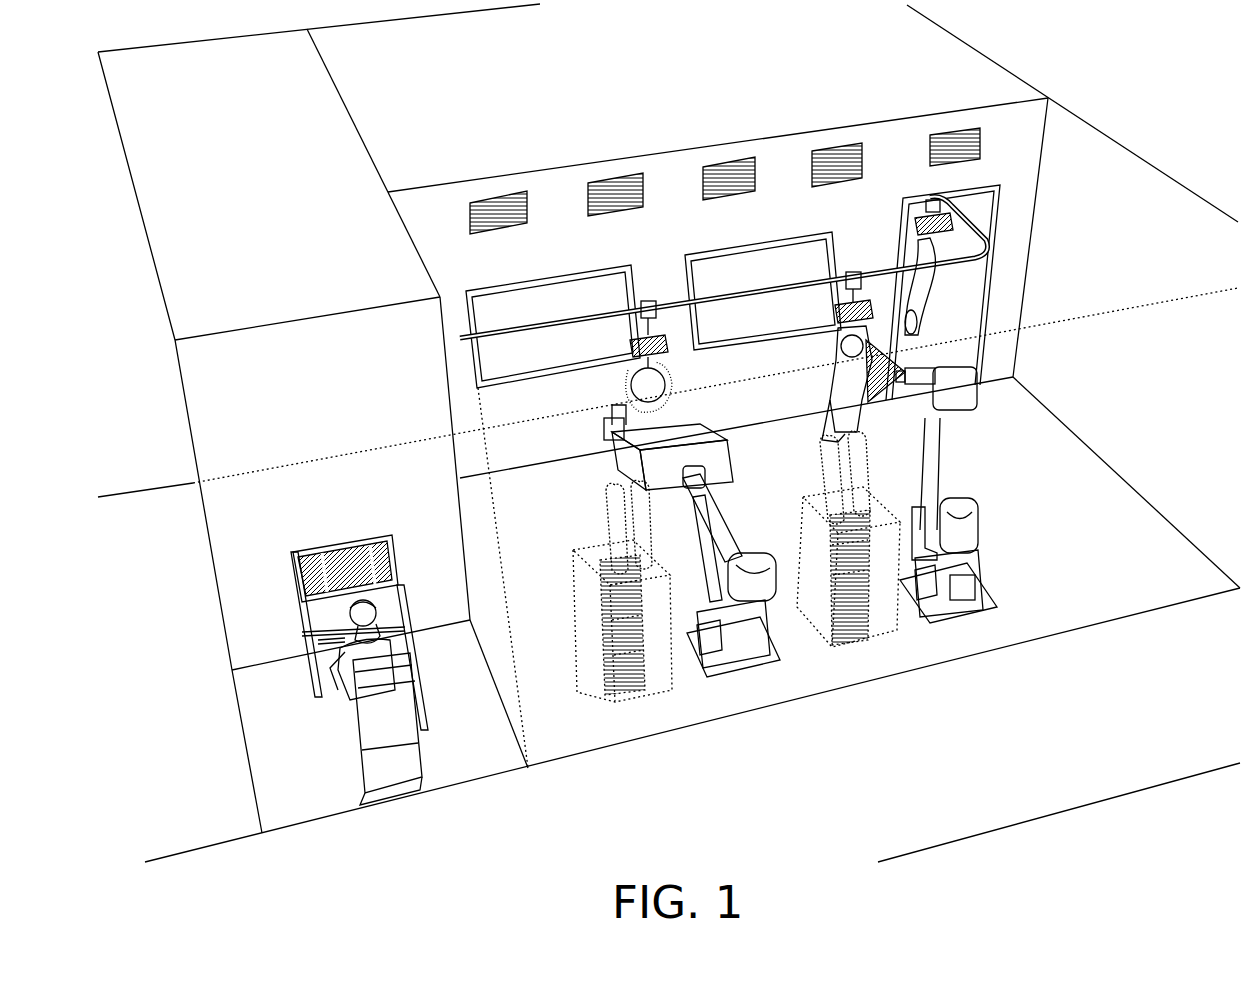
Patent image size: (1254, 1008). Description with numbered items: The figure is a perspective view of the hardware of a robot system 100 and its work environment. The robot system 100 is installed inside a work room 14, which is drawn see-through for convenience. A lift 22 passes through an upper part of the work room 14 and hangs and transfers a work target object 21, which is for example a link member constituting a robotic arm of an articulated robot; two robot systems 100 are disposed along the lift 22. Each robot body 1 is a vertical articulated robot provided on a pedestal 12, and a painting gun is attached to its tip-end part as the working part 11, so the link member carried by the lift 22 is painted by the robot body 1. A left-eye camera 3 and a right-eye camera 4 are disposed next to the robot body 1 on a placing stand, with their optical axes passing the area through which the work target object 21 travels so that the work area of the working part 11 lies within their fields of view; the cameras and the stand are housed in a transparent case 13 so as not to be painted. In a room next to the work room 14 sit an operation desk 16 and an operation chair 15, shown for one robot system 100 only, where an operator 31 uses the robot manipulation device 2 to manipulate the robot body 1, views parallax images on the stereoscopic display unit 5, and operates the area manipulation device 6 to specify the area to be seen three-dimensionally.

The robot body 1 is at (979, 477).
The robot manipulation device 2 is at (347, 617).
The left-eye camera 3 is at (827, 500).
The right-eye camera 4 is at (873, 517).
The stereoscopic display unit 5 is at (343, 543).
The area manipulation device 6 is at (327, 637).
The working part 11 is at (980, 358).
The pedestal 12 is at (982, 571).
The transparent case 13 is at (897, 620).
The work room 14 is at (1093, 125).
The operation chair 15 is at (373, 723).
The operation desk 16 is at (317, 620).
The work target object 21 is at (835, 387).
The lift 22 is at (983, 233).
The operator 31 is at (327, 677).
The robot system 100 is at (1113, 402).